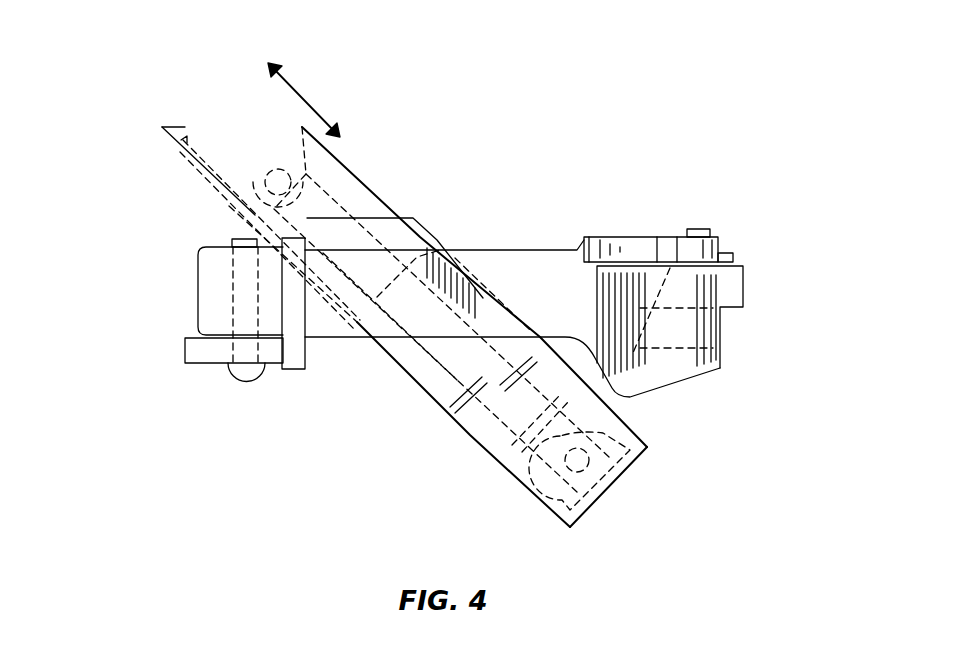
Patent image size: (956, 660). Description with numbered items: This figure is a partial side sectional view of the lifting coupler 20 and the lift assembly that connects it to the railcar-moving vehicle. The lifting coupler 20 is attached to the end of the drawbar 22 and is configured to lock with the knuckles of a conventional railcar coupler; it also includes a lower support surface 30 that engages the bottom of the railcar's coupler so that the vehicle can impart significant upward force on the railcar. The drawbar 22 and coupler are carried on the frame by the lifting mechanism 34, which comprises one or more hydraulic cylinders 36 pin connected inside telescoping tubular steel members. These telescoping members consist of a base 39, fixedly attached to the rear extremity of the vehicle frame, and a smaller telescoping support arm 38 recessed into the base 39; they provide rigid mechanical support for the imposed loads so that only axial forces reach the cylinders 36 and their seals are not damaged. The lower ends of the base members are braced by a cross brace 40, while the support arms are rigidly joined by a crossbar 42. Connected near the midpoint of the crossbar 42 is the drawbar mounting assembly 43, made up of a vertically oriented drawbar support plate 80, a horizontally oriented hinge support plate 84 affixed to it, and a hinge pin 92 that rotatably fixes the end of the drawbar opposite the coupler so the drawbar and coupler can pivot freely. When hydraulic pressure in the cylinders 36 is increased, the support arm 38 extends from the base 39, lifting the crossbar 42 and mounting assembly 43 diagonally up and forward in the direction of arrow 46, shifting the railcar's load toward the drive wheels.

The lifting coupler 20 is at (652, 230).
The drawbar 22 is at (527, 283).
The lower support surface 30 is at (672, 347).
The lifting mechanism 34 is at (420, 192).
The hydraulic cylinder 36 is at (437, 403).
The telescoping support arm 38 is at (347, 197).
The base member 39 is at (400, 365).
The cross brace 40 is at (482, 433).
The crossbar 42 is at (187, 182).
The drawbar mounting assembly 43 is at (182, 297).
The arrow 46 is at (303, 101).
The drawbar support plate 80 is at (298, 353).
The hinge support plate 84 is at (212, 352).
The hinge pin 92 is at (247, 293).